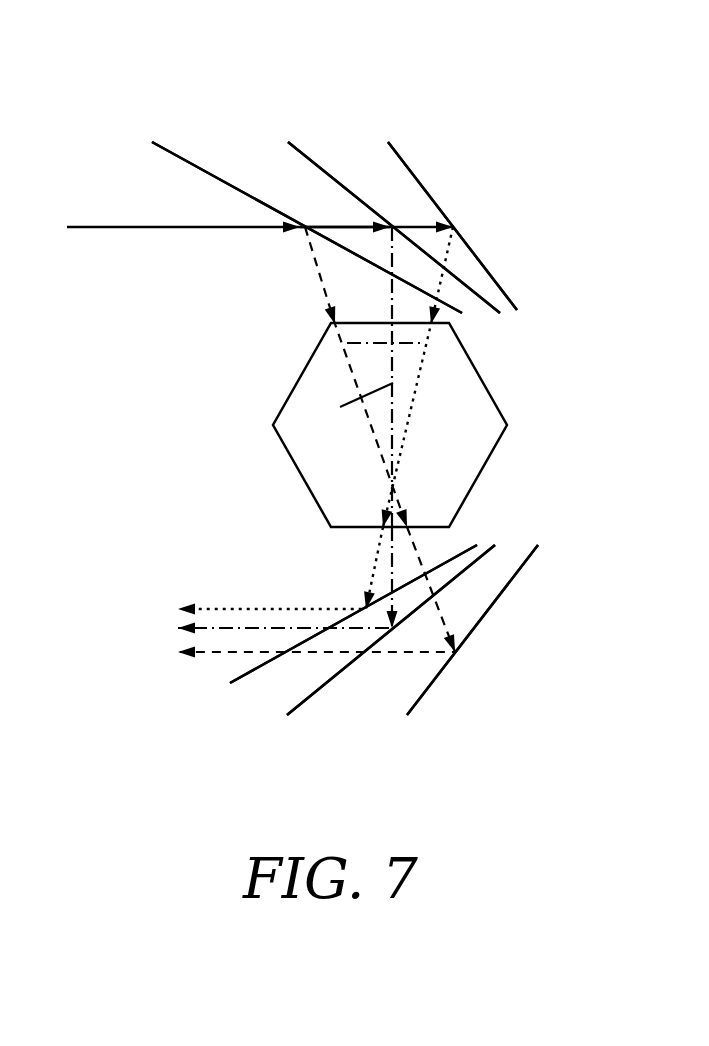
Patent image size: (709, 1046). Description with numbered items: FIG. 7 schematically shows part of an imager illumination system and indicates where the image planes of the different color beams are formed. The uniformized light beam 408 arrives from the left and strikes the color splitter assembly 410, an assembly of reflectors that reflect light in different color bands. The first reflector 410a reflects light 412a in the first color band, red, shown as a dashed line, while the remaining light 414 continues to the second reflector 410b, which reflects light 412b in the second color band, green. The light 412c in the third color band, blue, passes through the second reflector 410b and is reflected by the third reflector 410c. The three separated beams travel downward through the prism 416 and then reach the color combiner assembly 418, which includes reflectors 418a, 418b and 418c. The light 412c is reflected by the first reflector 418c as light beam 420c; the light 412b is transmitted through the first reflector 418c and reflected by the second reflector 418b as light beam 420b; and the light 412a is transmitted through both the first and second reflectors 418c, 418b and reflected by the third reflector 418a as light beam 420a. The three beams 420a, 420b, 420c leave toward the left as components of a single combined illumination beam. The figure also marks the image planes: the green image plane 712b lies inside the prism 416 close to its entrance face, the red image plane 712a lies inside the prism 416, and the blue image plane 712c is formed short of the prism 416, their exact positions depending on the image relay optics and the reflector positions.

The uniformized light beam 408 is at (90, 226).
The color splitter assembly 410 is at (524, 128).
The first reflector 410a is at (185, 157).
The second reflector 410b is at (310, 155).
The third reflector 410c is at (400, 155).
The light in the first color band 412a is at (315, 260).
The light in the second color band 412b is at (390, 290).
The light in the third color band 412c is at (448, 255).
The remaining light 414 is at (330, 225).
The prism 416 is at (480, 377).
The color combiner assembly 418 is at (478, 726).
The third reflector 418a is at (492, 610).
The second reflector 418b is at (308, 700).
The first reflector 418c is at (240, 678).
The light beam 420a is at (377, 654).
The light beam 420b is at (238, 628).
The light beam 420c is at (303, 607).
The red image plane 712a is at (345, 403).
The green image plane 712b is at (360, 353).
The blue image plane 712c is at (453, 287).